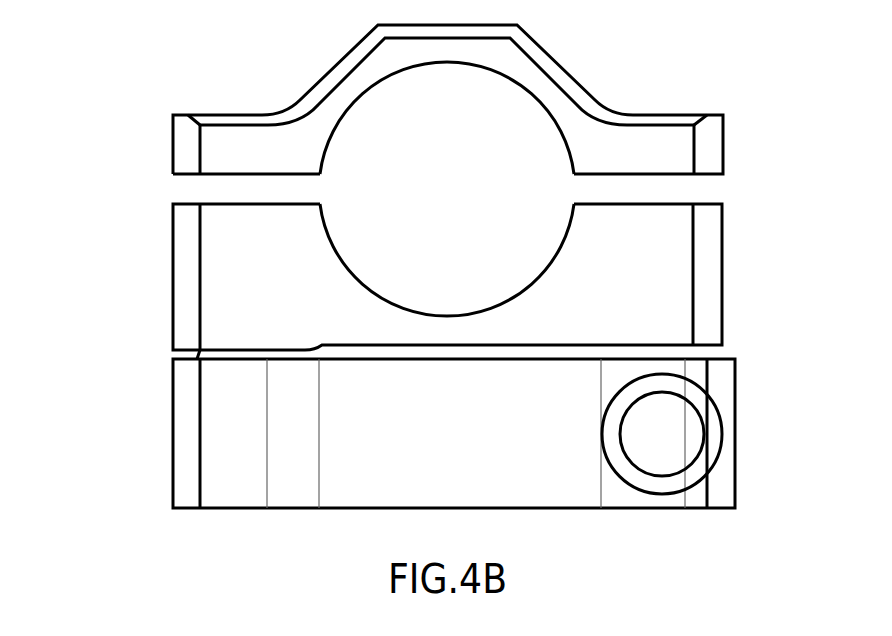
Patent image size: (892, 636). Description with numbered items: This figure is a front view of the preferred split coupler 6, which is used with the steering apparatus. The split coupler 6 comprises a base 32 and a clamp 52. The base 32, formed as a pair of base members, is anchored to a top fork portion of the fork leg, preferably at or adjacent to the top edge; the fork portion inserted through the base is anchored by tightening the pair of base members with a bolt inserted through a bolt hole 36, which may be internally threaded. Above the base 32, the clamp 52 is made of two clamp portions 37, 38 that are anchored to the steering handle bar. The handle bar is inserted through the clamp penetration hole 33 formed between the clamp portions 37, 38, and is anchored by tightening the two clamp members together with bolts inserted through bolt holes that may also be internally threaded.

The split coupler 6 is at (68, 113).
The clamp 52 is at (754, 148).
The clamp portion 38 is at (558, 66).
The clamp penetration hole 33 is at (428, 163).
The clamp portion 37 is at (680, 258).
The base 32 is at (368, 494).
The bolt hole 36 is at (680, 437).